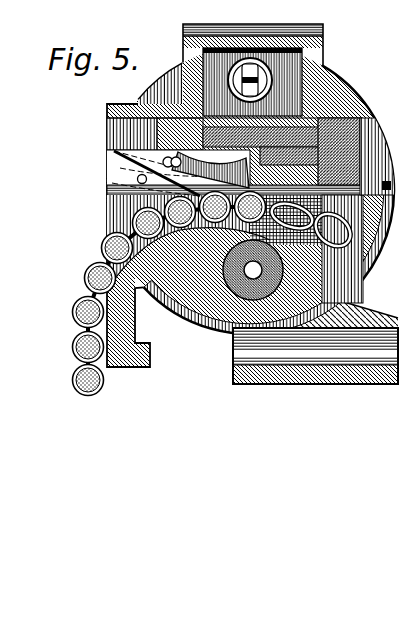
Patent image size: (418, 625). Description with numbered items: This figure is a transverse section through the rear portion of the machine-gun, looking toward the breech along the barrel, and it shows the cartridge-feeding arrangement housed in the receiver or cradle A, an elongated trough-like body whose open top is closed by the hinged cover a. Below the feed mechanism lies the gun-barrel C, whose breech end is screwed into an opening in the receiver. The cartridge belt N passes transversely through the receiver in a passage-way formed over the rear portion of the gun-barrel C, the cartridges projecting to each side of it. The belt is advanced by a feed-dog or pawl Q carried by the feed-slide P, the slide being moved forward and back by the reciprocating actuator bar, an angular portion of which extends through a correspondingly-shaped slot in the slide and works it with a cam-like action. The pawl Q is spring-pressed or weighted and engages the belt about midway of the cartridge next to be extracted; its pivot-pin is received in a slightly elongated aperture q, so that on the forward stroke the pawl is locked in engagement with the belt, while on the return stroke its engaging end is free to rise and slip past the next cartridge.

The cover a is at (225, 46).
The receiver or cradle A is at (322, 82).
The feed-slide P is at (366, 165).
The feed-dog or pawl Q is at (114, 152).
The aperture in the pawl q is at (113, 180).
The cartridge belt N is at (98, 275).
The gun-barrel C is at (247, 284).